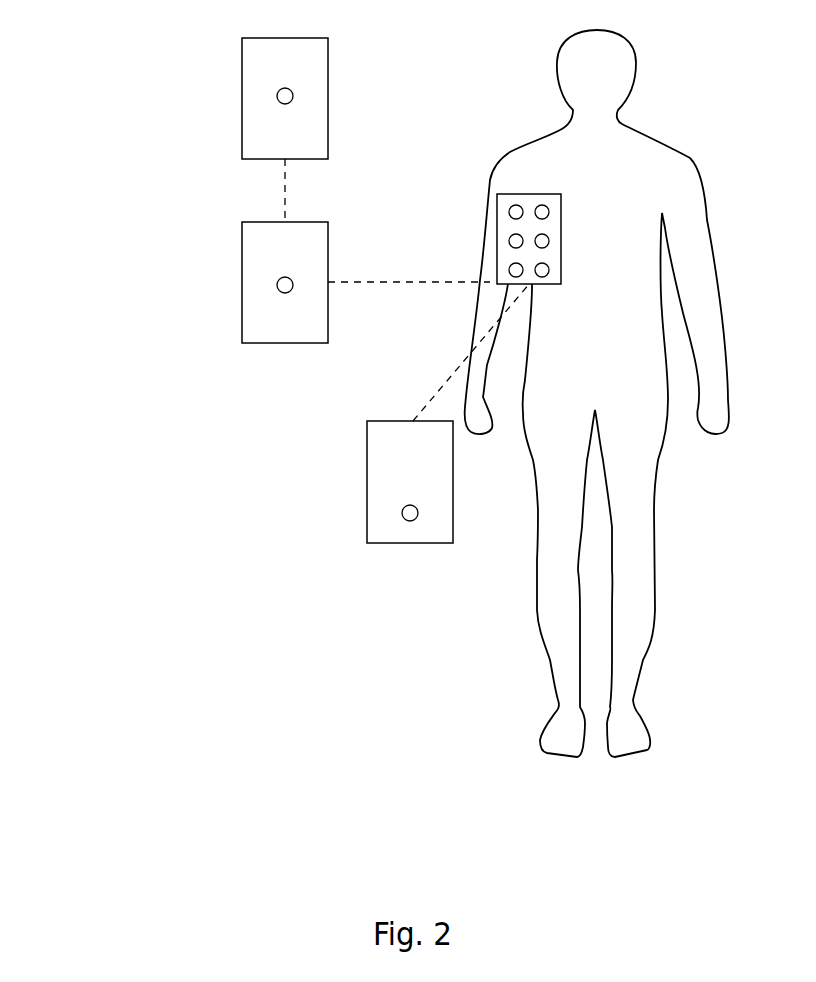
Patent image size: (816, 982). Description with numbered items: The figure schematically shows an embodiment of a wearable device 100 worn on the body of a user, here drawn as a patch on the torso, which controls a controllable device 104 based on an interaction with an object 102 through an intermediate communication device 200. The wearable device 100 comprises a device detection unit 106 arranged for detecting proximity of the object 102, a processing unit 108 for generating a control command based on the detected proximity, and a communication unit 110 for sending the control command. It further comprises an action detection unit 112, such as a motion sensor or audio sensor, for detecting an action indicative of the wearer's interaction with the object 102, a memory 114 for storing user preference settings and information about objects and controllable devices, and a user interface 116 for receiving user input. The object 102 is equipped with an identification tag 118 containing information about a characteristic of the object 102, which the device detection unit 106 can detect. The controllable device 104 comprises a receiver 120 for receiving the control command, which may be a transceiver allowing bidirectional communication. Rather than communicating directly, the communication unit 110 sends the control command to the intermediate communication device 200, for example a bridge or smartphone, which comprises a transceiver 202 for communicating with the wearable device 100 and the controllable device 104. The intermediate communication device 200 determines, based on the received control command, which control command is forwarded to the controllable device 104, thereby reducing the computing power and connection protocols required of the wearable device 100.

The wearable device 100 is at (517, 193).
The object 102 is at (367, 427).
The controllable device 104 is at (242, 44).
The device detection unit 106 is at (509, 212).
The processing unit 108 is at (509, 241).
The communication unit 110 is at (509, 270).
The action detection unit 112 is at (549, 212).
The memory 114 is at (549, 241).
The user interface 116 is at (549, 270).
The identification tag 118 is at (402, 513).
The receiver 120 is at (277, 96).
The intermediate communication device 200 is at (242, 228).
The transceiver 202 is at (277, 285).